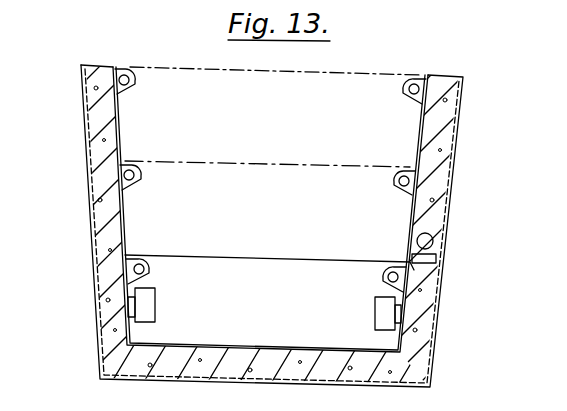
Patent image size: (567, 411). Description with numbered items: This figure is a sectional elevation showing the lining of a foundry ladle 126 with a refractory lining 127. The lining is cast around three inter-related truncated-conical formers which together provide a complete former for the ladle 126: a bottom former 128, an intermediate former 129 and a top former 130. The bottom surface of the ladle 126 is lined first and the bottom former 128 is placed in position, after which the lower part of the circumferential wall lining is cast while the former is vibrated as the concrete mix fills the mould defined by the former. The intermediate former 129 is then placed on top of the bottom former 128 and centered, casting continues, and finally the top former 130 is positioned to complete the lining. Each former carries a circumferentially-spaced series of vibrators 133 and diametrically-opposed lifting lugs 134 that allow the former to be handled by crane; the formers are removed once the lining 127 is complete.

The foundry ladle 126 is at (455, 168).
The refractory lining 127 is at (453, 140).
The bottom former 128 is at (140, 345).
The intermediate former 129 is at (145, 238).
The top former 130 is at (133, 133).
The vibrators 133 is at (150, 308).
The lifting lugs 134 is at (142, 176).